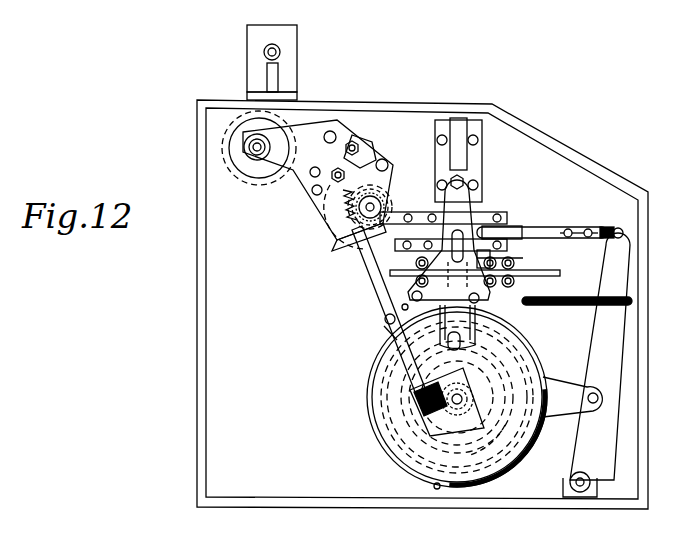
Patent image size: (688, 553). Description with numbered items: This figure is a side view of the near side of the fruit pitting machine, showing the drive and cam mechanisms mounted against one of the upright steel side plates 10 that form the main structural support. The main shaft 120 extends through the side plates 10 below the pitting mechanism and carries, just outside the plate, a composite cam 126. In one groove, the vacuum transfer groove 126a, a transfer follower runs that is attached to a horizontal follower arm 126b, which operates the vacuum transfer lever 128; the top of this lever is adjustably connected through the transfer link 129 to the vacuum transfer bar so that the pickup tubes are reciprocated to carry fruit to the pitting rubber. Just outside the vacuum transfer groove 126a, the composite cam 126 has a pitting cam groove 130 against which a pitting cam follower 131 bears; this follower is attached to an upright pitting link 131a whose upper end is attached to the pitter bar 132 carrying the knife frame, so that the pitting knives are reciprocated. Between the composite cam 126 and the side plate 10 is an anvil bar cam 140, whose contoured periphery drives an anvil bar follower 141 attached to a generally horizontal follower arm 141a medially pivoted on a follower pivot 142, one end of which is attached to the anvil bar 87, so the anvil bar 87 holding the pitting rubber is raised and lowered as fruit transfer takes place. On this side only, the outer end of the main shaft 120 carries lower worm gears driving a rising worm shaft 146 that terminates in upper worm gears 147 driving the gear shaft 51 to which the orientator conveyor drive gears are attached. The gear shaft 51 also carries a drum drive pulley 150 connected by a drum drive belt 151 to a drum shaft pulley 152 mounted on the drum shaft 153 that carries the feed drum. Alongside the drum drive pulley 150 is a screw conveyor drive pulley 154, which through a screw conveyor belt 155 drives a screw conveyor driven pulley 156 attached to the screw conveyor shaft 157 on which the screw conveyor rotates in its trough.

The side plate 10 is at (262, 364).
The gear shaft 51 is at (380, 200).
The anvil bar 87 is at (497, 256).
The main shaft 120 is at (457, 404).
The composite cam 126 is at (492, 468).
The vacuum transfer groove 126a is at (396, 448).
The horizontal follower arm 126b is at (515, 440).
The vacuum transfer lever 128 is at (582, 452).
The transfer link 129 is at (556, 232).
The pitting cam groove 130 is at (400, 478).
The pitting cam follower 131 is at (460, 340).
The upright pitting link 131a is at (458, 198).
The pitter bar 132 is at (460, 160).
The anvil bar cam 140 is at (546, 376).
The anvil bar follower 141 is at (385, 320).
The follower arm 141a is at (402, 307).
The follower pivot 142 is at (412, 295).
The rising worm shaft 146 is at (392, 336).
The upper worm gears 147 is at (334, 236).
The drum drive pulley 150 is at (392, 200).
The drum drive belt 151 is at (305, 133).
The drum shaft pulley 152 is at (222, 170).
The drum shaft 153 is at (250, 145).
The screw conveyor drive pulley 154 is at (375, 185).
The screw conveyor belt 155 is at (362, 165).
The screw conveyor driven pulley 156 is at (350, 140).
The screw conveyor shaft 157 is at (334, 180).